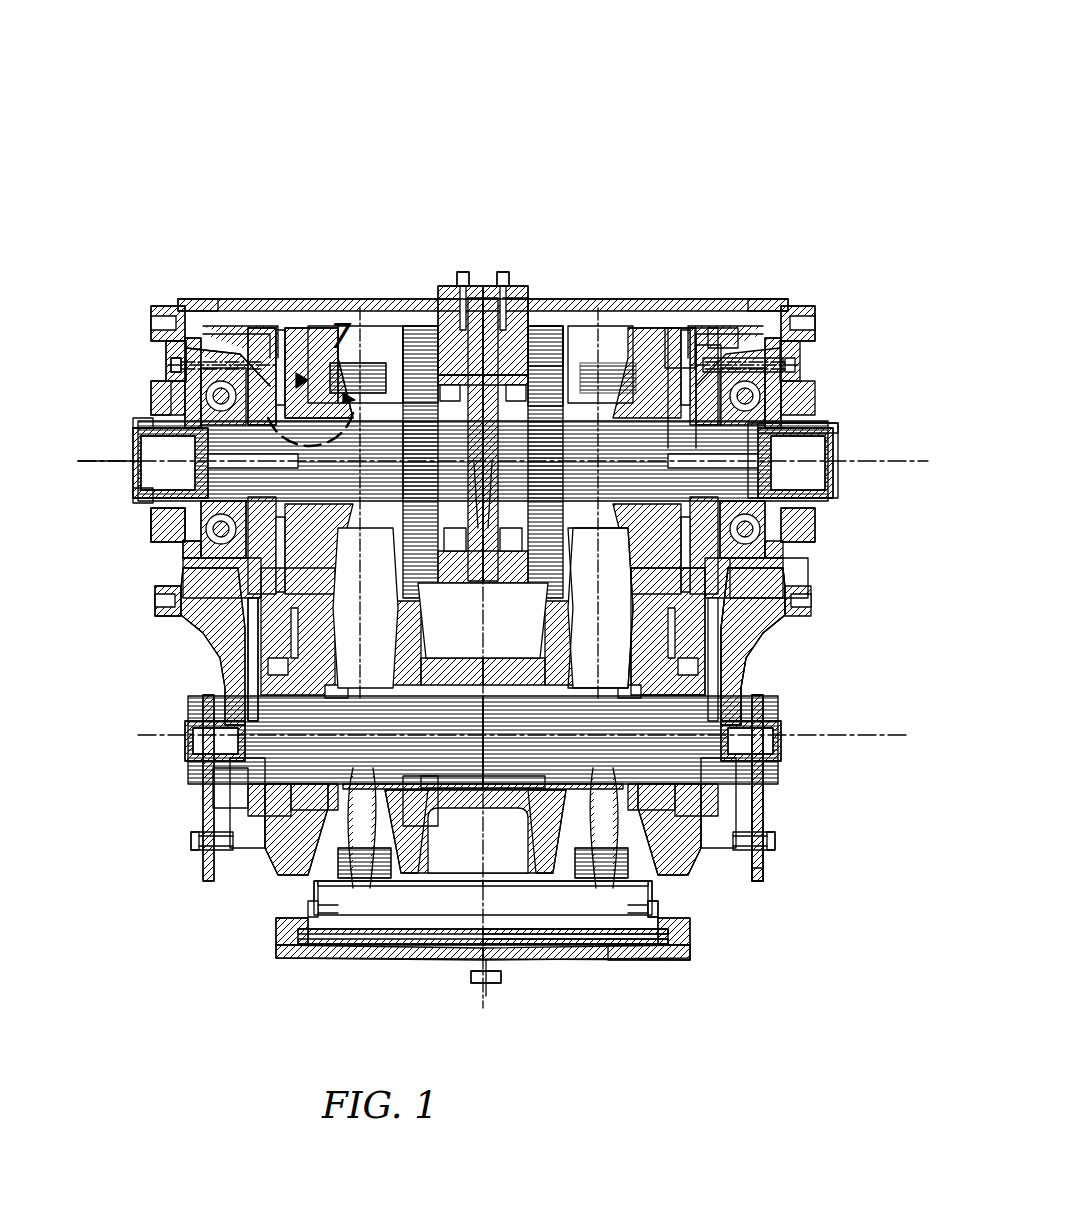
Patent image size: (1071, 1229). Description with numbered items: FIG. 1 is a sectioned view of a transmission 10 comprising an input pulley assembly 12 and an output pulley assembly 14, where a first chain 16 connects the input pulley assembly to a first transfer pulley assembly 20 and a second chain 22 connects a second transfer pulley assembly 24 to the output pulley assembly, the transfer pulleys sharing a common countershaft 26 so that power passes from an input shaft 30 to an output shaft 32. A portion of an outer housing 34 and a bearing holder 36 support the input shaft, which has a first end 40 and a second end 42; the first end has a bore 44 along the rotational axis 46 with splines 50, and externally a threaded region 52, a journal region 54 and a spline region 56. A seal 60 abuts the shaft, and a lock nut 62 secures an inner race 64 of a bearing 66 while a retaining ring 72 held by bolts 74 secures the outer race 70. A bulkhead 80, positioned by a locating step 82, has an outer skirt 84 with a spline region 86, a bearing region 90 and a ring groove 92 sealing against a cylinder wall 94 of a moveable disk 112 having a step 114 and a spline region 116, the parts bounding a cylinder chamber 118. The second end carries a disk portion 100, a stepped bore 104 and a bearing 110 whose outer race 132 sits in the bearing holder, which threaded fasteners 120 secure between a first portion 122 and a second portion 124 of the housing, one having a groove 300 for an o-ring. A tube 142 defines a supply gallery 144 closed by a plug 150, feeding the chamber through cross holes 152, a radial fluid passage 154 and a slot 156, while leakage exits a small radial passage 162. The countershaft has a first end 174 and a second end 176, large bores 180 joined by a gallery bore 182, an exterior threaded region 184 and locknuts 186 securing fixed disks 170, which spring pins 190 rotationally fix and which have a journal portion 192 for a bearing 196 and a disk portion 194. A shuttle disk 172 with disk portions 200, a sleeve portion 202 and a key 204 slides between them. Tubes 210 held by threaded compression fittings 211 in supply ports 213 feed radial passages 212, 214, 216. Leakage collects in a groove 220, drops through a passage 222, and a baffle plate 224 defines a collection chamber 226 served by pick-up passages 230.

The transmission 10 is at (731, 92).
The input pulley assembly 12 is at (398, 440).
The output pulley assembly 14 is at (640, 330).
The first chain 16 is at (327, 320).
The first transfer pulley assembly 20 is at (305, 960).
The second chain 22 is at (603, 330).
The second transfer pulley assembly 24 is at (670, 933).
The countershaft 26 is at (680, 940).
The input shaft 30 is at (135, 497).
The output shaft 32 is at (820, 440).
The outer housing 34 is at (336, 279).
The bearing holder 36 is at (506, 300).
The first end 40 is at (140, 412).
The second end 42 is at (386, 333).
The bore 44 is at (143, 433).
The rotational axis 46 is at (100, 455).
The splines 50 is at (143, 385).
The threaded region 52 is at (163, 356).
The journal region 54 is at (160, 297).
The spline region 56 is at (229, 340).
The seal 60 is at (145, 508).
The lock nut 62 is at (150, 520).
The inner race 64 is at (148, 585).
The bearing 66 is at (165, 560).
The outer race 70 is at (200, 550).
The retaining ring 72 is at (215, 570).
The bolts 74 is at (148, 348).
The bulkhead 80 is at (735, 350).
The locating step 82 is at (236, 335).
The outer skirt 84 is at (193, 330).
The spline region 86 is at (703, 355).
The bearing region 90 is at (797, 296).
The ring groove 92 is at (762, 325).
The cylinder wall 94 is at (666, 325).
The disk portion 100 is at (538, 345).
The stepped bore 104 is at (347, 355).
The bearing 110 is at (438, 320).
The moveable disk 112 is at (663, 330).
The step 114 is at (293, 325).
The spline region 116 is at (720, 325).
The cylinder chamber 118 is at (745, 560).
The threaded fasteners 120 is at (490, 262).
The first portion 122 is at (190, 298).
The second portion 124 is at (805, 290).
The outer race 132 is at (522, 320).
The tube 142 is at (553, 320).
The supply gallery 144 is at (760, 455).
The plug 150 is at (795, 420).
The cross holes 152 is at (810, 488).
The radial fluid passage 154 is at (805, 530).
The slot 156 is at (322, 310).
The small radial passage 162 is at (188, 442).
The fixed disk 170 is at (250, 860).
The shuttle disk 172 is at (410, 790).
The first end 174 is at (205, 790).
The second end 176 is at (770, 845).
The large bore 180 is at (195, 765).
The gallery bore 182 is at (745, 700).
The exterior threaded region 184 is at (208, 800).
The locknut 186 is at (235, 835).
The spring pins 190 is at (330, 890).
The journal portion 192 is at (745, 870).
The disk portion 194 is at (275, 945).
The bearing 196 is at (240, 660).
The disk portions 200 is at (500, 980).
The sleeve portion 202 is at (460, 950).
The key 204 is at (455, 770).
The tube 210 is at (352, 870).
The threaded compression fittings 211 is at (175, 738).
The radial passage 212 is at (385, 840).
The supply ports 213 is at (183, 722).
The radial passage 214 is at (690, 690).
The radial passage 216 is at (505, 850).
The groove 220 is at (735, 615).
The passage 222 is at (745, 640).
The baffle plate 224 is at (640, 960).
The collection chamber 226 is at (620, 970).
The pick-up passages 230 is at (565, 935).
The groove 300 is at (470, 262).